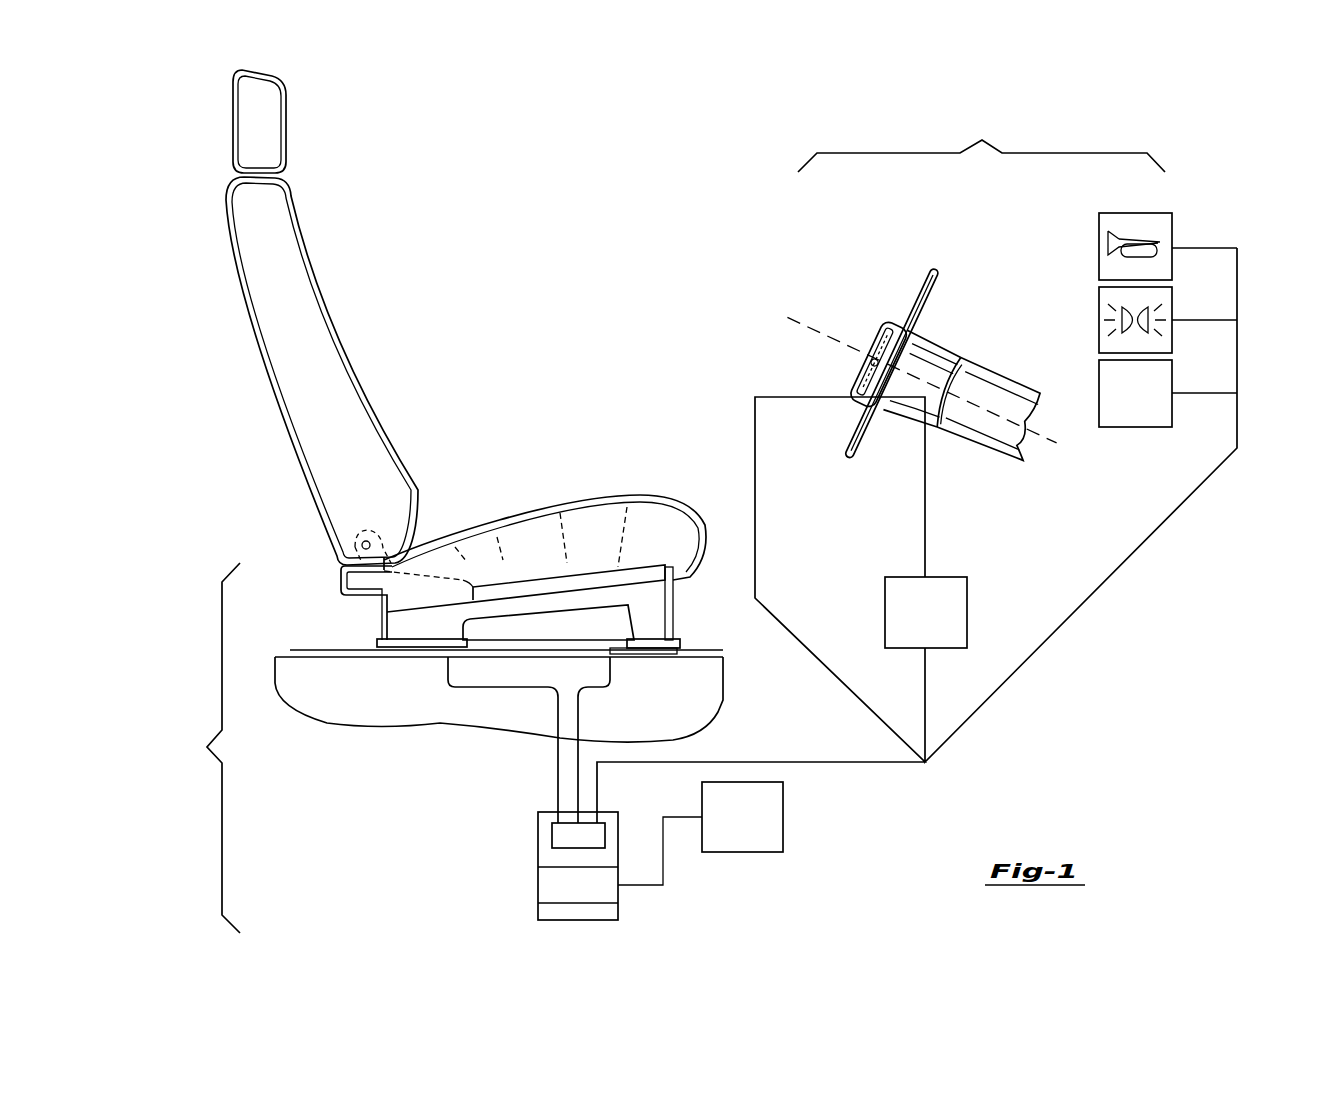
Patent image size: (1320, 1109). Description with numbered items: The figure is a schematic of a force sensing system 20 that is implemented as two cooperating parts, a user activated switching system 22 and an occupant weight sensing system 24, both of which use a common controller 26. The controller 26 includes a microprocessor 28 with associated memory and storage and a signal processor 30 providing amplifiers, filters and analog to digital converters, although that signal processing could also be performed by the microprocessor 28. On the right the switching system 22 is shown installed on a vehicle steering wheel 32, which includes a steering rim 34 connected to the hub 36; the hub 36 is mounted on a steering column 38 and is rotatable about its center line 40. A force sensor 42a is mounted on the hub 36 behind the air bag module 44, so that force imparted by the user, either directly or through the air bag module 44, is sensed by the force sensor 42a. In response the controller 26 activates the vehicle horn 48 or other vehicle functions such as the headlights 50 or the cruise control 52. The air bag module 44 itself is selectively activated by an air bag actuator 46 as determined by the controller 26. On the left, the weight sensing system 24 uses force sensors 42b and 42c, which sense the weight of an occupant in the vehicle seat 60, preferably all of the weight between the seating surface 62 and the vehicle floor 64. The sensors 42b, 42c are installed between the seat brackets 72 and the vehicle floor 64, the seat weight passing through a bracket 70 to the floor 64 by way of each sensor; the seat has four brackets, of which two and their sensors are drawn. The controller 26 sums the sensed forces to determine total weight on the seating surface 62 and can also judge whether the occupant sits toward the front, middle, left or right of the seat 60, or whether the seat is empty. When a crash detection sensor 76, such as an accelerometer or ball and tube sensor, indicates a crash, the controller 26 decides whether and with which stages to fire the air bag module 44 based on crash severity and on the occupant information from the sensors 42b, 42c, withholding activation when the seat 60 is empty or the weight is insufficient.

The force sensing system 20 is at (202, 209).
The user activated switching system 22 is at (917, 464).
The occupant weight sensing system 24 is at (207, 748).
The controller 26 is at (583, 920).
The microprocessor 28 is at (546, 892).
The signal processor 30 is at (552, 837).
The steering wheel 32 is at (841, 308).
The steering rim 34 is at (940, 262).
The hub 36 is at (897, 327).
The steering column 38 is at (1013, 340).
The center line 40 is at (806, 318).
The force sensor 42a is at (890, 327).
The force sensor 42b is at (685, 646).
The force sensor 42c is at (377, 638).
The air bag module 44 is at (867, 363).
The air bag actuator 46 is at (967, 595).
The vehicle horn 48 is at (1099, 255).
The headlights 50 is at (1099, 328).
The cruise control 52 is at (1099, 402).
The vehicle seat 60 is at (314, 262).
The seating surface 62 is at (607, 495).
The vehicle floor 64 is at (723, 648).
The bracket 70 is at (673, 608).
The brackets 72 is at (380, 603).
The crash detection sensor 76 is at (783, 818).